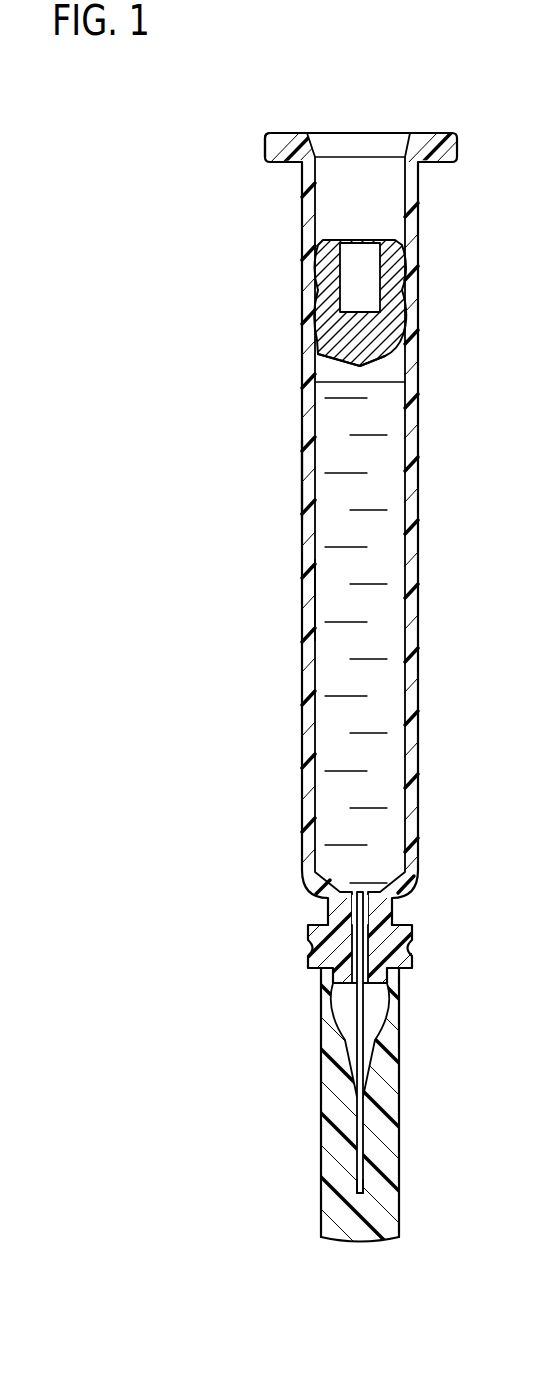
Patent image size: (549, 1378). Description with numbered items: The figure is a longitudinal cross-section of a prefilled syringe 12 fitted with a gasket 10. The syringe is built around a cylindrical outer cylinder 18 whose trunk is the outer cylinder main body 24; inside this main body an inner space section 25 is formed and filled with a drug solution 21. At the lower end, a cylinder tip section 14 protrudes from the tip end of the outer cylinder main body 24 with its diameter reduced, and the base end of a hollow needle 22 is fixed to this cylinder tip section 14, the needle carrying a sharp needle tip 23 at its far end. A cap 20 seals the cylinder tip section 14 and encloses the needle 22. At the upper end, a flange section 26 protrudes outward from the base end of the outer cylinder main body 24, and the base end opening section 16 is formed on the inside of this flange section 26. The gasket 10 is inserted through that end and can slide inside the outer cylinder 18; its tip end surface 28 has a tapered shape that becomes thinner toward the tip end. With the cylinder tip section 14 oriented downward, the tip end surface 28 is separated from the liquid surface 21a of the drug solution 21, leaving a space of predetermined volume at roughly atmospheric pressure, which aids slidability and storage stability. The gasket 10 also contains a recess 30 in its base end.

The prefilled syringe 12 is at (151, 103).
The base end opening section 16 is at (372, 145).
The flange section 26 is at (272, 150).
The plunger rod engagement hole 30 is at (358, 262).
The gasket 10 is at (364, 279).
The liquid surface 21a is at (325, 381).
The tip end surface 28 is at (402, 376).
The outer cylinder main body 24 is at (302, 484).
The outer cylinder 18 is at (418, 485).
The inner space section 25 is at (318, 610).
The drug solution 21 is at (380, 636).
The cylinder tip section 14 is at (380, 952).
The needle 22 is at (362, 1046).
The cap 20 is at (383, 1140).
The needle tip 23 is at (365, 1189).